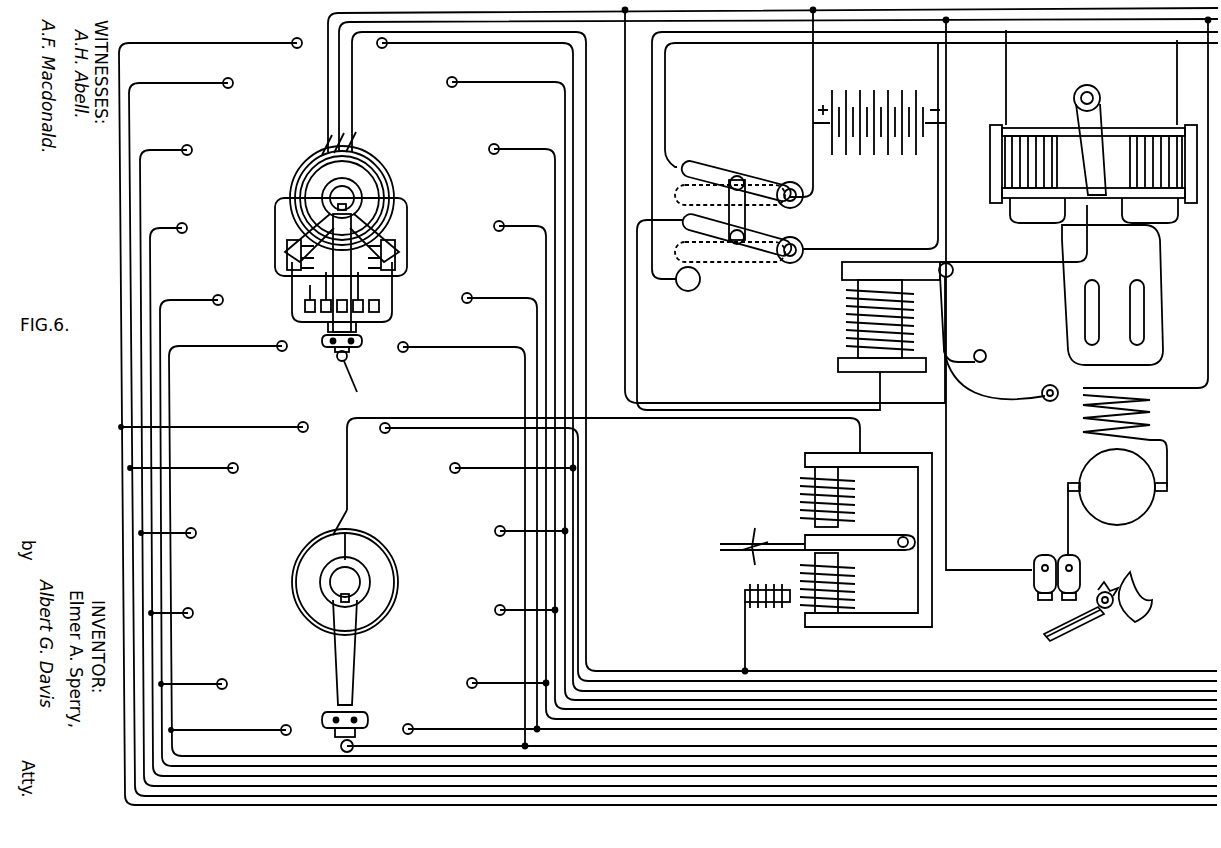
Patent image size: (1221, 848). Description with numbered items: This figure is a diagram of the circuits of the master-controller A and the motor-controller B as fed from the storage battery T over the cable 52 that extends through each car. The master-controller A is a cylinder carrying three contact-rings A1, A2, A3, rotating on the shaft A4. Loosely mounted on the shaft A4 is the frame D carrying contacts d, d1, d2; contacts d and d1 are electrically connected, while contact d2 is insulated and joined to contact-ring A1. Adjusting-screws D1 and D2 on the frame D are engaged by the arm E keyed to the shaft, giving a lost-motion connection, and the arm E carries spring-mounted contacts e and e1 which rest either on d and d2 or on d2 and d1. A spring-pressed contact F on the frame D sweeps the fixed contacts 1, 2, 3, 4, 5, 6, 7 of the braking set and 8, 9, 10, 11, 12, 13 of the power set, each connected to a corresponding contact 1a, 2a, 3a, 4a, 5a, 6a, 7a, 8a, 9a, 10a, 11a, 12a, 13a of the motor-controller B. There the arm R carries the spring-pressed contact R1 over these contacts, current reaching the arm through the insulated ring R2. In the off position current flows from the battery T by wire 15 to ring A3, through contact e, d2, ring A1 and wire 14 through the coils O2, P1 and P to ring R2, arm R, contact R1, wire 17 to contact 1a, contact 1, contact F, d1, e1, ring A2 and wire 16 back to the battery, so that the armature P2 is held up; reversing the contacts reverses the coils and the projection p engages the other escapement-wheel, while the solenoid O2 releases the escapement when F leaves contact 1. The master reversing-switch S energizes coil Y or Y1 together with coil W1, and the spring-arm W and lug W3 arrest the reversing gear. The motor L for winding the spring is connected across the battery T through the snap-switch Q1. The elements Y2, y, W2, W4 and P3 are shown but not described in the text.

The fixed contact 1 is at (356, 385).
The fixed contact 2 is at (407, 343).
The fixed contact 3 is at (471, 293).
The fixed contact 4 is at (503, 221).
The fixed contact 5 is at (498, 145).
The fixed contact 6 is at (456, 77).
The fixed contact 7 is at (796, 364).
The fixed contact 8 is at (668, 421).
The fixed contact 9 is at (224, 79).
The fixed contact 10 is at (183, 147).
The fixed contact 11 is at (178, 225).
The fixed contact 12 is at (213, 296).
The fixed contact 13 is at (277, 343).
The wire 14 is at (354, 89).
The wire 15 is at (323, 17).
The wire 16 is at (336, 89).
The wire 17 is at (522, 708).
The cable 52 is at (973, 664).
The fixed contact 1a is at (356, 718).
The fixed contact 2a is at (810, 717).
The fixed contact 3a is at (507, 671).
The fixed contact 4a is at (521, 598).
The fixed contact 5a is at (527, 519).
The fixed contact 6a is at (512, 456).
The fixed contact 7a is at (797, 552).
The fixed contact 8a is at (217, 439).
The fixed contact 9a is at (187, 456).
The fixed contact 10a is at (176, 521).
The fixed contact 11a is at (179, 601).
The fixed contact 12a is at (198, 672).
The fixed contact 13a is at (234, 718).
The master-controller A is at (323, 185).
The contact-ring A1 is at (355, 170).
The contact-ring A2 is at (372, 173).
The contact-ring A3 is at (388, 195).
The shaft A4 is at (325, 192).
The motor-controller B is at (330, 570).
The frame D is at (292, 300).
The adjusting-screw D1 is at (397, 245).
The adjusting-screw D2 is at (287, 254).
The contact d is at (305, 308).
The contact d1 is at (379, 306).
The contact d2 is at (336, 334).
The arm E is at (358, 226).
The contact e is at (326, 344).
The contact e1 is at (358, 344).
The spring-pressed contact F is at (348, 359).
The arm R is at (354, 662).
The spring-pressed contact R1 is at (340, 740).
The ring R2 is at (372, 545).
The master reversing-switch S is at (717, 178).
The battery T is at (868, 103).
The coil Y is at (1087, 126).
The coil Y1 is at (1159, 131).
The pivot arm Y2 is at (1025, 173).
The armature plate y is at (1085, 310).
The spring-arm W is at (950, 320).
The coil W1 is at (858, 320).
The pivot W2 is at (1042, 390).
The lug W3 is at (987, 355).
The hinge W4 is at (955, 285).
The motor L is at (1100, 497).
The magnet-coil P is at (848, 492).
The magnet-coil P1 is at (850, 584).
The armature P2 is at (884, 532).
The rod P3 is at (776, 544).
The projection p is at (742, 556).
The solenoid O2 is at (742, 598).
The snap-switch Q1 is at (1080, 615).